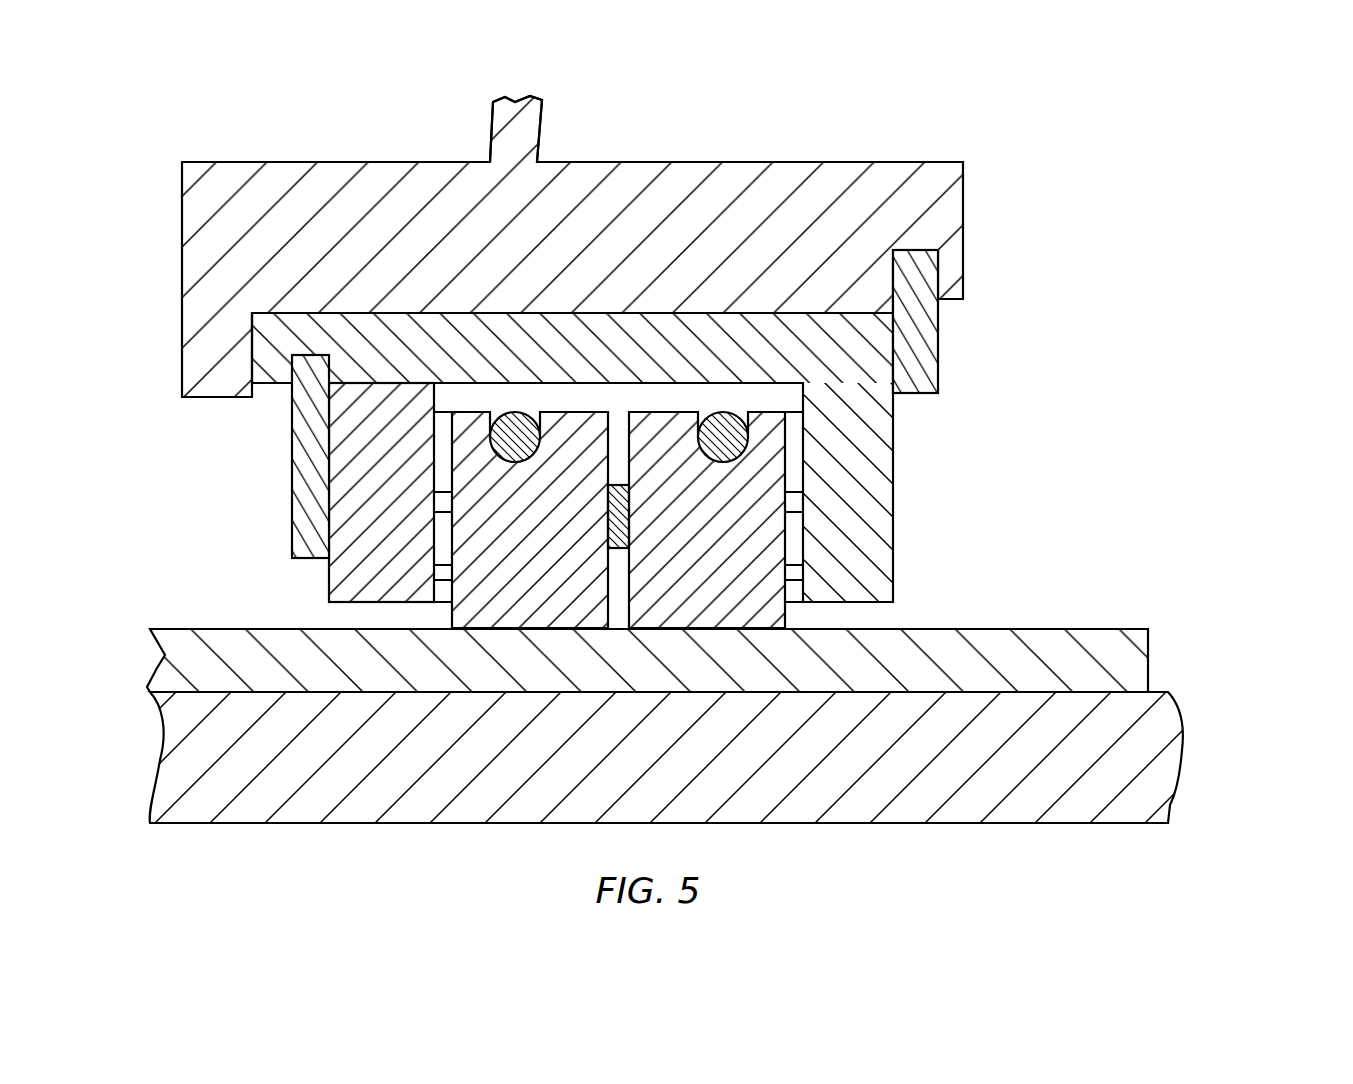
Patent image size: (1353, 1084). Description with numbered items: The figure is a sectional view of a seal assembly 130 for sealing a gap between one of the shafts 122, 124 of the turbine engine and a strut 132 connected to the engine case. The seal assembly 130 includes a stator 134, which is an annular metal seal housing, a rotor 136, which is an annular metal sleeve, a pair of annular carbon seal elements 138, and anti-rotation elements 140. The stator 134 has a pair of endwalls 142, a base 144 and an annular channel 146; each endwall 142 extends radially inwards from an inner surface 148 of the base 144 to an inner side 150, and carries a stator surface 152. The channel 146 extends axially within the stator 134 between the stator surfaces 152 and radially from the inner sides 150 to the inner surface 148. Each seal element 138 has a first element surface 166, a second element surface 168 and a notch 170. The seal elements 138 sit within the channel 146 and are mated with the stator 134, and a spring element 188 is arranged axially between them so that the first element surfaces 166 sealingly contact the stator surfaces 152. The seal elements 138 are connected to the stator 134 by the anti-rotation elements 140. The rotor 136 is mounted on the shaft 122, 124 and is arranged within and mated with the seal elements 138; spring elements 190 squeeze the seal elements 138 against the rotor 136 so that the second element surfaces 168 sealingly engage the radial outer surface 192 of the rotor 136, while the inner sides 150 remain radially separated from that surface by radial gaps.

The shaft 122 is at (659, 791).
The shaft 124 is at (1163, 747).
The seal assembly 130 is at (603, 246).
The strut 132 is at (540, 127).
The stator 134 is at (262, 466).
The rotor 136 is at (1148, 650).
The seal element 138 is at (762, 454).
The anti-rotation element 140 is at (430, 503).
The endwall 142 is at (330, 430).
The base 144 is at (250, 328).
The annular channel 146 is at (797, 399).
The inner surface 148 is at (778, 386).
The inner side 150 is at (375, 600).
The stator surface 152 is at (444, 400).
The first element surface 166 is at (432, 437).
The second element surface 168 is at (530, 629).
The notch 170 is at (430, 614).
The spring element 188 is at (604, 535).
The spring element 190 is at (521, 413).
The radial outer surface 192 is at (1082, 628).